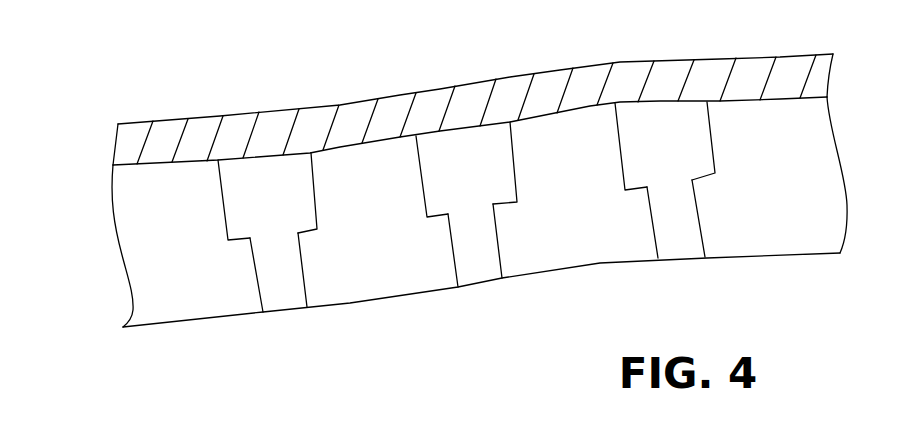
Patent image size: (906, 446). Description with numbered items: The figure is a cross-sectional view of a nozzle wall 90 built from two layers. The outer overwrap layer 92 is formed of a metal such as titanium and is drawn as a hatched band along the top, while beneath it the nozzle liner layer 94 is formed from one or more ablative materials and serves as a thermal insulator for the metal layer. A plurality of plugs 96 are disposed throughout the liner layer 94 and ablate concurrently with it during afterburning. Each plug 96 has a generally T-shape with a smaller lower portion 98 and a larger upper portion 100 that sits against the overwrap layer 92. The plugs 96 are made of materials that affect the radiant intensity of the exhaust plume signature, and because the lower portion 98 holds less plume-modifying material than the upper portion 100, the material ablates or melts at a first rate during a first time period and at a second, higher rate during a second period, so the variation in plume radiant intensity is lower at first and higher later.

The nozzle wall 90 is at (106, 60).
The overwrap layer 92 is at (115, 152).
The nozzle liner layer 94 is at (123, 257).
The plug 96 is at (222, 203).
The lower portion 98 is at (268, 286).
The upper portion 100 is at (243, 206).